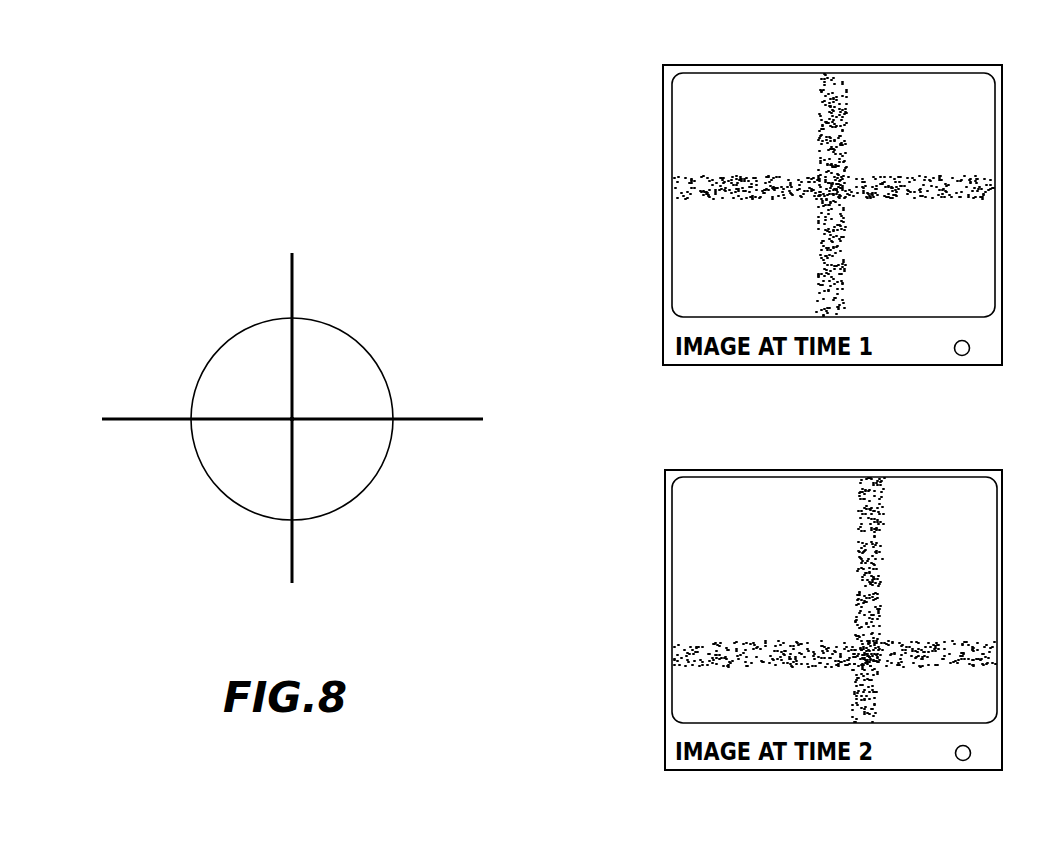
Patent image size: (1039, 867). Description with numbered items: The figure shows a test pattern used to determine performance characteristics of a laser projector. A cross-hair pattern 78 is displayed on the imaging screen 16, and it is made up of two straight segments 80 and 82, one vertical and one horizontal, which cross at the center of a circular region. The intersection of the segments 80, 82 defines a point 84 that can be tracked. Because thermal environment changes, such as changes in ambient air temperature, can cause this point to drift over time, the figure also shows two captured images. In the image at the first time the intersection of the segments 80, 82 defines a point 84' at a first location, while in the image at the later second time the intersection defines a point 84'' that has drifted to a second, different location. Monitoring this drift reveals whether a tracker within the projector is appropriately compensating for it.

The imaging screen 16 is at (186, 498).
The cross-hair pattern 78 is at (463, 392).
The straight segment 80 is at (292, 280).
The straight segment 82 is at (122, 418).
The point 84 is at (352, 473).
The point at time 1 84' is at (888, 229).
The point at time 2 84'' is at (910, 678).